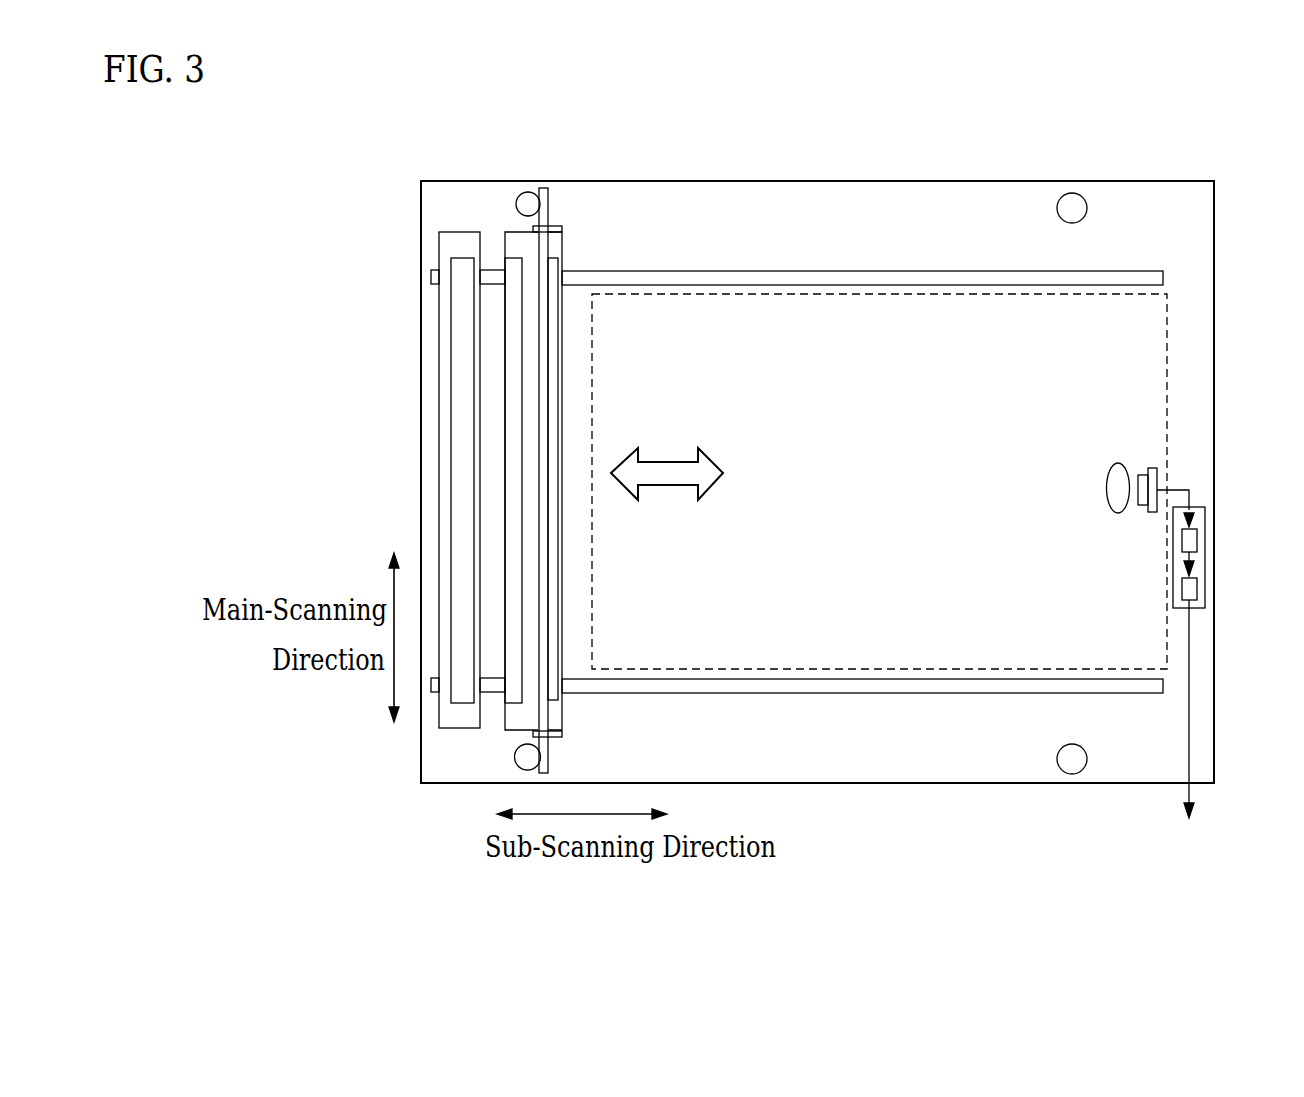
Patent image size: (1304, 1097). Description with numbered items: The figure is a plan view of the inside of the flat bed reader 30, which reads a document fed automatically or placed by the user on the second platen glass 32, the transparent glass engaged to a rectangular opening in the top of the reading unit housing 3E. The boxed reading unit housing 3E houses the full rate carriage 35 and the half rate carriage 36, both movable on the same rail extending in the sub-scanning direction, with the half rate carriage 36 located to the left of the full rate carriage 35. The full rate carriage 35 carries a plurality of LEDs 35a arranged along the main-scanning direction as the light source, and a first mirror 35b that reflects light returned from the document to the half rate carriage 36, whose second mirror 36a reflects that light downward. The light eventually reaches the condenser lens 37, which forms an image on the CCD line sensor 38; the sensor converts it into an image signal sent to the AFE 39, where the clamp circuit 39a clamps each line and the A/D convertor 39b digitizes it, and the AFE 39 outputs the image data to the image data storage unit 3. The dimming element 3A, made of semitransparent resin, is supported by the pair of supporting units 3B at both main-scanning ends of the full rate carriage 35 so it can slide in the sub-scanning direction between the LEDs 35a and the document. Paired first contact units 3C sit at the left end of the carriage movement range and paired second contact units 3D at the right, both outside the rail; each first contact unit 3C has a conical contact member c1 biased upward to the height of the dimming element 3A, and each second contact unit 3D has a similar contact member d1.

The flat bed reader 30 is at (455, 122).
The dimming element 3A is at (549, 222).
The supporting unit 3B is at (561, 227).
The first contact unit 3C is at (523, 192).
The second contact unit 3D is at (1057, 210).
The reading unit housing 3E is at (845, 181).
The second platen glass 32 is at (1167, 314).
The full rate carriage 35 is at (502, 723).
The LED 35a is at (553, 700).
The first mirror 35b is at (511, 257).
The half rate carriage 36 is at (458, 232).
The second mirror 36a is at (462, 385).
The condenser lens 37 is at (1115, 463).
The CCD line sensor 38 is at (1152, 468).
The AFE 39 is at (1198, 507).
The clamp circuit 39a is at (1197, 540).
The A/D convertor 39b is at (1197, 590).
The contact member c1 is at (516, 205).
The contact member d1 is at (1087, 208).
The image data storage unit 3 is at (1141, 734).